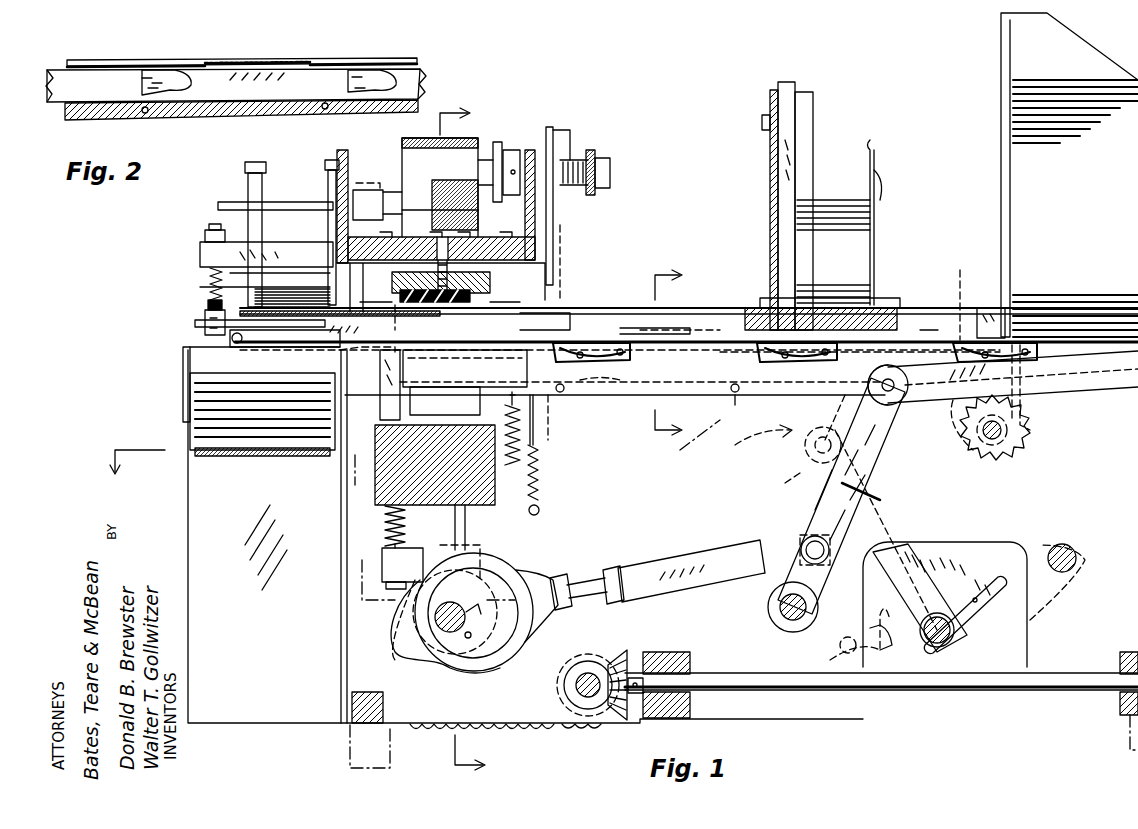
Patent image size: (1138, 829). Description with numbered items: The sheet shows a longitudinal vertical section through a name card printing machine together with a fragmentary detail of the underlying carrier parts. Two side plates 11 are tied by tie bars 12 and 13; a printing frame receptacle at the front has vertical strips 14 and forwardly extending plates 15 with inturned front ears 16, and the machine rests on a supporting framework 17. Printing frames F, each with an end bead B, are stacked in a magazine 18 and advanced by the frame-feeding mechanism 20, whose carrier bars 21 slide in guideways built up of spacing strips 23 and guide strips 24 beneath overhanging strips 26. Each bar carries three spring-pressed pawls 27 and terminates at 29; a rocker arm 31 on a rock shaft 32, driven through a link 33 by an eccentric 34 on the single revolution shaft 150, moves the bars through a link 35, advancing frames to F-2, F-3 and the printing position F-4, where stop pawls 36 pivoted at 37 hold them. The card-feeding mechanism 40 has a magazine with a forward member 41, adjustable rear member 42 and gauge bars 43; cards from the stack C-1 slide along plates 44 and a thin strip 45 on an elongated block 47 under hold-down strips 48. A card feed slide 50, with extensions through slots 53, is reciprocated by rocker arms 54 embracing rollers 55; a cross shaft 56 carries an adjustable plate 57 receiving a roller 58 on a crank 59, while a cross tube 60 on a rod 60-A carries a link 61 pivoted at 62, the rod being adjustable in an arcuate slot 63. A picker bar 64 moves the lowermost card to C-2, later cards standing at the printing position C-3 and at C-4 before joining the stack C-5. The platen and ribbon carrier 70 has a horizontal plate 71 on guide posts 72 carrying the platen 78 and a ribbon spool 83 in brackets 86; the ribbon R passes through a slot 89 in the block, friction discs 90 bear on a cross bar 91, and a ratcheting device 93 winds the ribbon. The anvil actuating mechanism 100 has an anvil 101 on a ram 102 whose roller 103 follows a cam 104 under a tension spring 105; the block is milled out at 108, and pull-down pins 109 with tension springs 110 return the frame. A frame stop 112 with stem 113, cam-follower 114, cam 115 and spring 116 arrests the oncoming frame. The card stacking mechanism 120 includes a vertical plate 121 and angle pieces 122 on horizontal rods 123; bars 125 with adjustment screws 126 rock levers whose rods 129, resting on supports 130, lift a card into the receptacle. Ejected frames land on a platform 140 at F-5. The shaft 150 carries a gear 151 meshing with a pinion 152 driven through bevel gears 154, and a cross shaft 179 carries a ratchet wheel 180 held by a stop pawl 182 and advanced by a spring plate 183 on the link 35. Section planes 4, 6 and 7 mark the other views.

In FIG. 1, the side plates 11 is at (1127, 582).
In FIG. 1, the tie bar 12 is at (352, 706).
In FIG. 1, the tie bar 13 is at (385, 487).
In FIG. 1, the vertical strips 14 is at (340, 488).
In FIG. 1, the forwardly extending plates 15 is at (188, 522).
In FIG. 1, the inturned front ears 16 is at (183, 372).
In FIG. 1, the supporting framework 17 is at (350, 768).
In FIG. 1, the magazine 18 is at (1001, 52).
In FIG. 1, the frame-feeding mechanism 20 is at (891, 444).
In FIG. 2, the carrier bars 21 is at (432, 70).
In FIG. 1, the carrier bars 21 is at (1108, 380).
In FIG. 2, the spacing strips 23 is at (208, 108).
In FIG. 1, the guide strips 24 is at (350, 374).
In FIG. 2, the overhanging strips 26 is at (210, 60).
In FIG. 1, the overhanging strips 26 is at (650, 307).
In FIG. 2, the spring-pressed pawls 27 is at (160, 72).
In FIG. 1, the spring-pressed pawls 27 is at (961, 294).
In FIG. 1, the carrier bar termination 29 is at (554, 417).
In FIG. 1, the rocker arm 31 is at (805, 528).
In FIG. 1, the rock shaft 32 is at (780, 615).
In FIG. 1, the link 33 is at (715, 560).
In FIG. 1, the eccentric 34 is at (497, 660).
In FIG. 1, the link 35 is at (933, 400).
In FIG. 1, the stop pawls 36 is at (590, 367).
In FIG. 1, the pivot 37 is at (599, 416).
In FIG. 1, the card-feeding mechanism 40 is at (736, 448).
In FIG. 1, the forward member 41 is at (770, 99).
In FIG. 1, the adjustable rear member 42 is at (876, 152).
In FIG. 1, the gauge bars 43 is at (775, 197).
In FIG. 1, the card support plates 44 is at (692, 387).
In FIG. 1, the thin strip 45 is at (572, 327).
In FIG. 1, the elongated block 47 is at (285, 340).
In FIG. 1, the hold-down strips 48 is at (640, 302).
In FIG. 1, the card feed slide 50 is at (850, 305).
In FIG. 1, the slots 53 is at (665, 328).
In FIG. 1, the rocker arms 54 is at (775, 479).
In FIG. 1, the rollers 55 is at (860, 357).
In FIG. 1, the cross shaft 56 is at (1068, 551).
In FIG. 1, the adjustable plate 57 is at (975, 560).
In FIG. 1, the roller 58 is at (838, 650).
In FIG. 1, the crank 59 is at (810, 640).
In FIG. 1, the cross tube 60 is at (975, 657).
In FIG. 1, the rod 60-A is at (937, 650).
In FIG. 1, the link 61 is at (913, 555).
In FIG. 1, the pivotal connection 62 is at (812, 457).
In FIG. 1, the arcuate adjustment slot 63 is at (978, 606).
In FIG. 1, the picker bar 64 is at (872, 310).
In FIG. 1, the platen and ribbon carrier 70 is at (508, 135).
In FIG. 1, the horizontal plate 71 is at (520, 262).
In FIG. 1, the guide posts 72 is at (365, 185).
In FIG. 1, the platen 78 is at (482, 260).
In FIG. 1, the ribbon spool 83 is at (451, 187).
In FIG. 1, the brackets 86 is at (500, 142).
In FIG. 1, the slot 89 is at (395, 330).
In FIG. 1, the spring-pressed friction discs 90 is at (582, 160).
In FIG. 1, the non-rotating cross bar 91 is at (600, 172).
In FIG. 1, the ratcheting device 93 is at (570, 130).
In FIG. 1, the anvil actuating mechanism 100 is at (368, 553).
In FIG. 1, the anvil 101 is at (445, 401).
In FIG. 1, the ram 102 is at (466, 519).
In FIG. 1, the cam-following roller 103 is at (480, 556).
In FIG. 1, the cam 104 is at (400, 657).
In FIG. 1, the tension spring 105 is at (533, 452).
In FIG. 1, the milled-out clearance 108 is at (465, 368).
In FIG. 1, the pull-down pins 109 is at (520, 452).
In FIG. 1, the tension springs 110 is at (540, 507).
In FIG. 1, the frame stop 112 is at (380, 412).
In FIG. 1, the stem 113 is at (385, 514).
In FIG. 1, the cam-follower 114 is at (402, 568).
In FIG. 1, the cam 115 is at (460, 667).
In FIG. 1, the spring 116 is at (390, 547).
In FIG. 1, the card stacking mechanism 120 is at (200, 317).
In FIG. 1, the vertical plate 121 is at (328, 188).
In FIG. 1, the angle pieces 122 is at (263, 174).
In FIG. 1, the horizontal rods 123 is at (225, 202).
In FIG. 1, the bars 125 is at (210, 242).
In FIG. 1, the adjustment screws 126 is at (215, 274).
In FIG. 1, the rods 129 is at (195, 332).
In FIG. 1, the supports 130 is at (237, 344).
In FIG. 1, the platform 140 is at (285, 472).
In FIG. 1, the single revolution shaft 150 is at (455, 617).
In FIG. 1, the gear 151 is at (483, 730).
In FIG. 1, the pinion 152 is at (590, 730).
In FIG. 1, the bevel gears 154 is at (620, 658).
In FIG. 1, the cross shaft 179 is at (992, 440).
In FIG. 1, the ratchet wheel 180 is at (1016, 442).
In FIG. 1, the stop pawl 182 is at (1041, 393).
In FIG. 1, the spring plate 183 is at (966, 427).
In FIG. 1, the section plane 4— 4 is at (132, 477).
In FIG. 1, the section plane 6— 6 is at (678, 356).
In FIG. 1, the section plane 7— 7 is at (472, 442).
In FIG. 2, the supporting bead B is at (326, 62).
In FIG. 1, the supporting bead B is at (1123, 367).
In FIG. 2, the printing frame F is at (301, 60).
In FIG. 1, the ribbon R is at (468, 322).
In FIG. 1, the card stack position C-1 is at (835, 202).
In FIG. 1, the card position C-2 is at (730, 327).
In FIG. 1, the card printing position C-3 is at (560, 272).
In FIG. 1, the printed card position C-4 is at (215, 292).
In FIG. 1, the printed card stack C-5 is at (295, 290).
In FIG. 1, the frame position F-2 is at (930, 307).
In FIG. 1, the frame position F-3 is at (712, 337).
In FIG. 1, the frame printing position F-4 is at (500, 302).
In FIG. 1, the ejected frame position F-5 is at (192, 432).